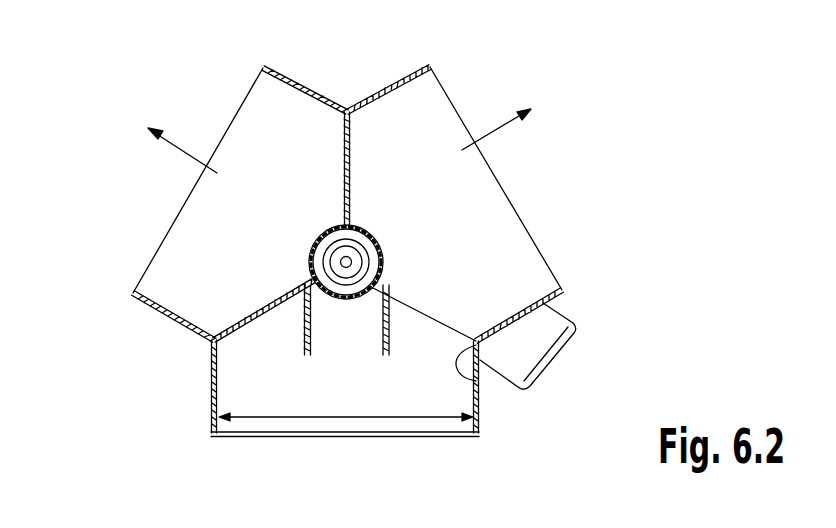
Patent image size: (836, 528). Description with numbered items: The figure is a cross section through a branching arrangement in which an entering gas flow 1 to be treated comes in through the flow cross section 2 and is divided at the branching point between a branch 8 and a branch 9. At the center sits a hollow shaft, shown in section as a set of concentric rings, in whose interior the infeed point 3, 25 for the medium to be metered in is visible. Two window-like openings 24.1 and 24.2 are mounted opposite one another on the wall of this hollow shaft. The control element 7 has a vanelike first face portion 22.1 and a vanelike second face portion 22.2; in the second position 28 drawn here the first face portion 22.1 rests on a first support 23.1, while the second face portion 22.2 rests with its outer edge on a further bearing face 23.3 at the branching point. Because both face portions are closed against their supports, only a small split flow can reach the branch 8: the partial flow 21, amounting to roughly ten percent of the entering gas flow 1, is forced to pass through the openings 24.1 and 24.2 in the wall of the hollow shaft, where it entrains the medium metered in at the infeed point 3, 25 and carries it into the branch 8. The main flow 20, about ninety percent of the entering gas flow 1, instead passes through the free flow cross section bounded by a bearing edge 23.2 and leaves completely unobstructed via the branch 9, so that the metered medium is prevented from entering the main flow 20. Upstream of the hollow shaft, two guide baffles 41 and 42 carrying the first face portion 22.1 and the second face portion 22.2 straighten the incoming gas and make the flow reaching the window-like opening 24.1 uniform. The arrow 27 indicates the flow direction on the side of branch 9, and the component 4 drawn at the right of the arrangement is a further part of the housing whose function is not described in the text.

The gas flow 1 is at (318, 398).
The flow cross section 2 is at (432, 424).
The infeed point 3 is at (352, 261).
The infeed point 25 is at (346, 262).
The clamp 4 is at (537, 356).
The control element 7 is at (327, 148).
The branch 8 is at (175, 230).
The branch 9 is at (440, 85).
The main flow 20 is at (487, 136).
The partial flow 21 is at (193, 158).
The first face portion 22.1 is at (257, 316).
The second face portion 22.2 is at (350, 173).
The first support 23.1 is at (213, 326).
The bearing edge 23.2 is at (479, 360).
The bearing face 23.3 is at (355, 120).
The window-like opening 24.1 is at (360, 296).
The window-like opening 24.2 is at (330, 226).
The flow direction 27 is at (460, 305).
The second position 28 is at (236, 366).
The guide baffle 41 is at (308, 356).
The guide baffle 42 is at (386, 358).